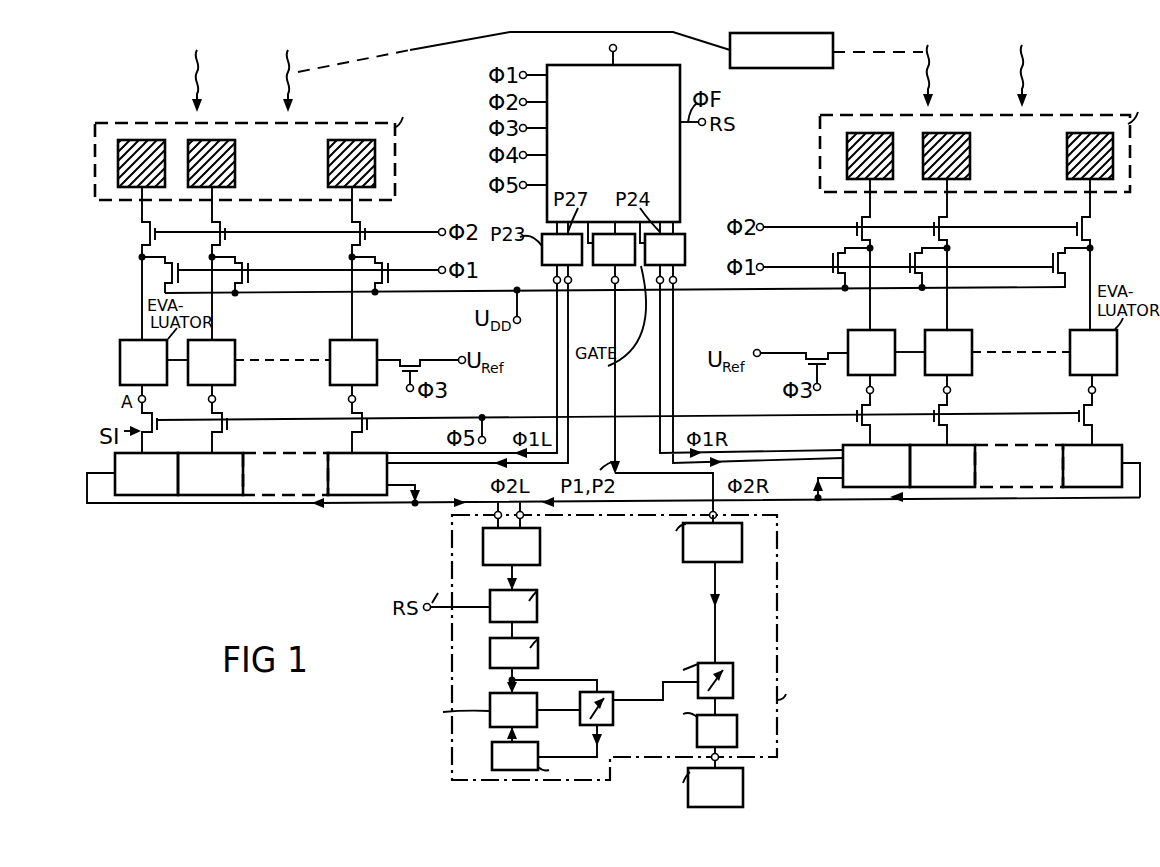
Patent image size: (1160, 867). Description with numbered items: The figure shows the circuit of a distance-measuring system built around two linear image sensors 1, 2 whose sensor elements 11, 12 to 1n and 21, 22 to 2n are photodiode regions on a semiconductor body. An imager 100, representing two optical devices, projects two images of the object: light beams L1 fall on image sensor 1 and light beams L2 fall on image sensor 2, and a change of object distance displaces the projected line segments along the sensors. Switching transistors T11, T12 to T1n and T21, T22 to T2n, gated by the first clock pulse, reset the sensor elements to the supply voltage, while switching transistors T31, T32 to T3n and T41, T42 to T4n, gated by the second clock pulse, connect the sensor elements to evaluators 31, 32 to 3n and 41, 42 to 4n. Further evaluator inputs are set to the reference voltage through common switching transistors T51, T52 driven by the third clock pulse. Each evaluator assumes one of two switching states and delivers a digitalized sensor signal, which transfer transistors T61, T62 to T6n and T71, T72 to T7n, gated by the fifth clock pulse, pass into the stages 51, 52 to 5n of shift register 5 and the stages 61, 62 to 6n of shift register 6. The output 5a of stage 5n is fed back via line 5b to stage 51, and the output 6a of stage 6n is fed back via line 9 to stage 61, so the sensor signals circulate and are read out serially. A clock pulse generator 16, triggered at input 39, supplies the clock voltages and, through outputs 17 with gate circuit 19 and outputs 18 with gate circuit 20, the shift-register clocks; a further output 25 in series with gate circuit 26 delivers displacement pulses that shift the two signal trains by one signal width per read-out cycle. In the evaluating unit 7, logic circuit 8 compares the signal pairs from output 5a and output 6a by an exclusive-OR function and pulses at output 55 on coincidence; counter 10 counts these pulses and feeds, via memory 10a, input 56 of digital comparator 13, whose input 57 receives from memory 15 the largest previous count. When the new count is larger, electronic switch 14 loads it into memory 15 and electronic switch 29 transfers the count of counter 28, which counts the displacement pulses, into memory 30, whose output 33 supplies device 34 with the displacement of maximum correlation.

The linear image sensor 1 is at (127, 124).
The linear image sensor 2 is at (850, 116).
The sensor element 11 is at (131, 163).
The sensor element 12 is at (226, 163).
The sensor element 1n is at (338, 163).
The sensor element 21 is at (859, 156).
The sensor element 22 is at (961, 156).
The sensor element 2n is at (1076, 156).
The light beams L1 is at (242, 81).
The light beams L2 is at (975, 76).
The switching transistor T31 is at (168, 263).
The switching transistor T32 is at (238, 263).
The switching transistor T3n is at (377, 263).
The switching transistor T11 is at (177, 269).
The switching transistor T12 is at (249, 271).
The switching transistor T1n is at (353, 270).
The switching transistor T41 is at (847, 254).
The switching transistor T42 is at (923, 254).
The switching transistor T4n is at (1067, 254).
The switching transistor T21 is at (835, 268).
The switching transistor T22 is at (916, 264).
The switching transistor T2n is at (1055, 267).
The common switching transistor T51 is at (421, 360).
The common switching transistor T52 is at (801, 359).
The transfer transistor T61 is at (169, 428).
The transfer transistor T62 is at (238, 428).
The transfer transistor T6n is at (379, 428).
The transfer transistor T71 is at (847, 419).
The transfer transistor T72 is at (924, 419).
The transfer transistor T7n is at (1070, 419).
The evaluator 31 is at (143, 362).
The evaluator 32 is at (211, 362).
The evaluator 3n is at (353, 362).
The evaluator 41 is at (871, 352).
The evaluator 42 is at (948, 352).
The evaluator 4n is at (1093, 352).
The shift register 5 is at (285, 458).
The stage 51 is at (146, 474).
The stage 52 is at (210, 474).
The stage 5n is at (357, 474).
The output 5a is at (729, 509).
The line 5b is at (205, 503).
The shift register 6 is at (1019, 452).
The stage 61 is at (876, 466).
The stage 62 is at (942, 466).
The stage 6n is at (1092, 466).
The output 6a is at (972, 497).
The line 9 is at (821, 480).
The clock pulse generator 16 is at (613, 143).
The input 39 is at (627, 52).
The imager 100 is at (798, 72).
The gate circuit 19 is at (562, 249).
The gate circuit 26 is at (614, 249).
The gate circuit 20 is at (665, 249).
The outputs 17 is at (570, 283).
The output 25 is at (617, 283).
The outputs 18 is at (675, 283).
The evaluating unit 7 is at (777, 637).
The logic circuit 8 is at (541, 546).
The output 55 is at (485, 566).
The counter 10 is at (546, 606).
The memory 10a is at (546, 653).
The input 56 is at (508, 681).
The digital comparator 13 is at (442, 710).
The electronic switch 14 is at (638, 673).
The input 57 is at (508, 730).
The memory 15 is at (552, 758).
The counter 28 is at (682, 542).
The electronic switch 29 is at (701, 662).
The memory 30 is at (687, 730).
The output 33 is at (722, 759).
The device 34 is at (688, 787).